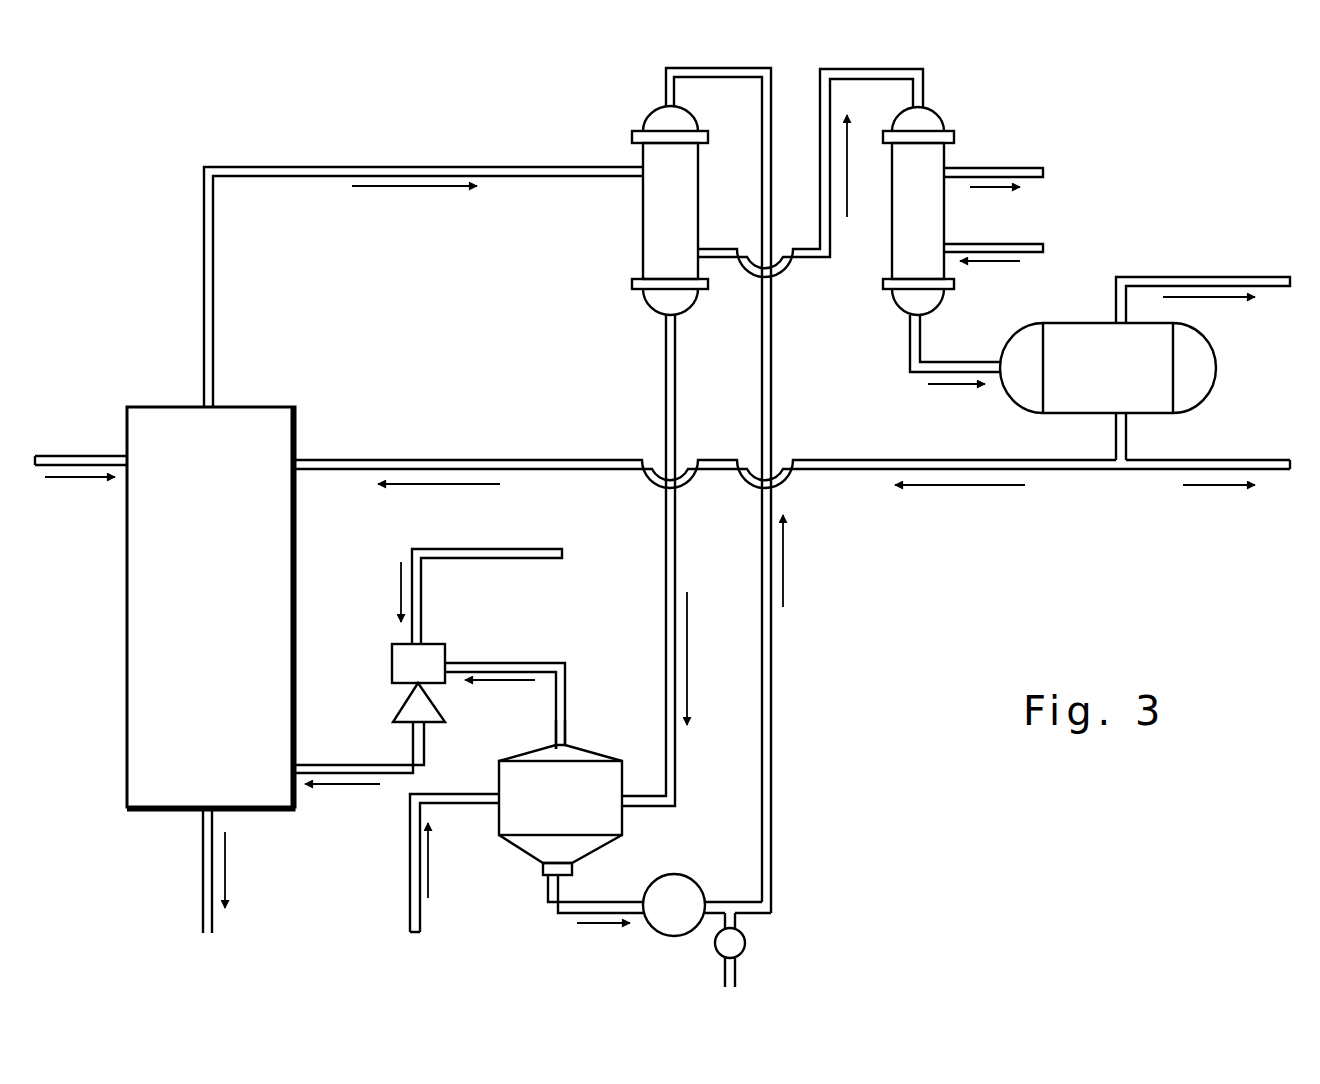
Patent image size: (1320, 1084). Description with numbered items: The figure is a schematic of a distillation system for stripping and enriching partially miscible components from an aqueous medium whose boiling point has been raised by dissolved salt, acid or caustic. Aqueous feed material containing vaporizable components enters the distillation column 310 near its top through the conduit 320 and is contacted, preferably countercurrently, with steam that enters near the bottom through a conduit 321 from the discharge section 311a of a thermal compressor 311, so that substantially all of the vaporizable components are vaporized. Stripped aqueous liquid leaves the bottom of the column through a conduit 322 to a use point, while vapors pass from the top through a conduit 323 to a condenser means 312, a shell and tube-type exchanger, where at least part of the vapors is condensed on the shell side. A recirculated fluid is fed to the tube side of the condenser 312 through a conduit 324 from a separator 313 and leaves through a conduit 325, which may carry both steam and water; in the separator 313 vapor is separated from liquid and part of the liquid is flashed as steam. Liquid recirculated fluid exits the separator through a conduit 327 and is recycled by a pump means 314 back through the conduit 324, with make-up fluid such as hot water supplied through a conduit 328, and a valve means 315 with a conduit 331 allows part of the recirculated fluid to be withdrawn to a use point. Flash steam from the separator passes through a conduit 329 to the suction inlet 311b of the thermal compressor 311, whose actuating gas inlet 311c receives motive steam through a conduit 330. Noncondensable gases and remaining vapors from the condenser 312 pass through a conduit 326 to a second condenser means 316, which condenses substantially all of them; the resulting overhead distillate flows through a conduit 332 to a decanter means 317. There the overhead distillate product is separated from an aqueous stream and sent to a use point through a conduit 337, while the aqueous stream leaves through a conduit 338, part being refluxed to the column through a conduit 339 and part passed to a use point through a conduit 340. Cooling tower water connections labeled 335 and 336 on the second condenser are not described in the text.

The distillation column 310 is at (148, 668).
The thermal compressor 311 is at (437, 664).
The discharge section 311a is at (425, 722).
The suction inlet 311b is at (448, 660).
The actuating gas inlet 311c is at (420, 643).
The condenser means 312 is at (660, 228).
The separator 313 is at (605, 808).
The pump means 314 is at (668, 935).
The valve means 315 is at (745, 943).
The second condenser means 316 is at (940, 125).
The decanter means 317 is at (1030, 393).
The conduit 320 is at (115, 455).
The conduit 321 is at (350, 763).
The conduit 322 is at (203, 884).
The conduit 323 is at (308, 167).
The conduit 324 is at (666, 88).
The conduit 325 is at (665, 383).
The conduit 326 is at (923, 70).
The conduit 327 is at (563, 915).
The conduit 328 is at (410, 862).
The conduit 329 is at (566, 705).
The conduit 330 is at (490, 550).
The conduit 331 is at (738, 968).
The conduit 332 is at (910, 335).
The cooling water inlet 335 is at (1035, 255).
The cooling water outlet 336 is at (1043, 180).
The conduit 337 is at (1165, 277).
The conduit 338 is at (1116, 440).
The conduit 339 is at (405, 458).
The conduit 340 is at (1190, 464).